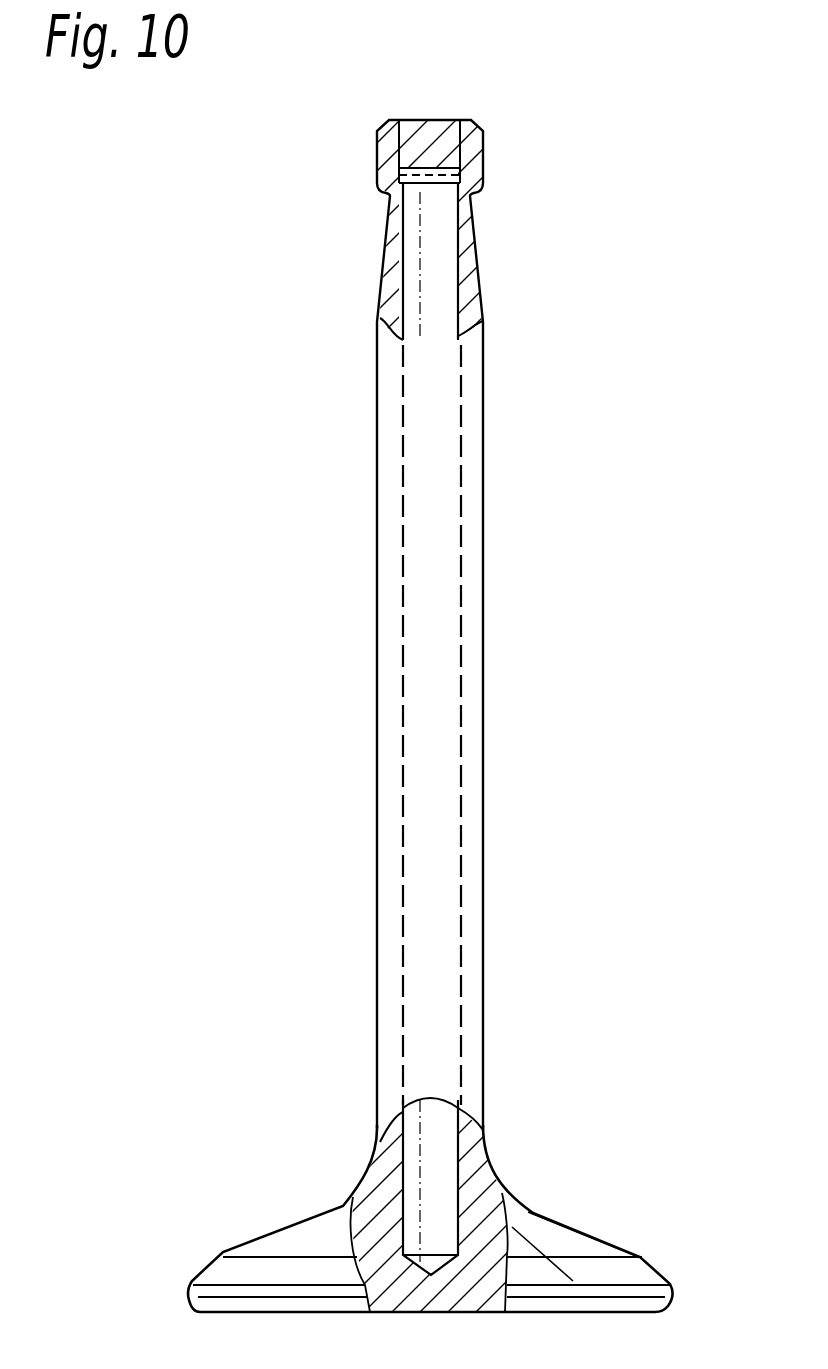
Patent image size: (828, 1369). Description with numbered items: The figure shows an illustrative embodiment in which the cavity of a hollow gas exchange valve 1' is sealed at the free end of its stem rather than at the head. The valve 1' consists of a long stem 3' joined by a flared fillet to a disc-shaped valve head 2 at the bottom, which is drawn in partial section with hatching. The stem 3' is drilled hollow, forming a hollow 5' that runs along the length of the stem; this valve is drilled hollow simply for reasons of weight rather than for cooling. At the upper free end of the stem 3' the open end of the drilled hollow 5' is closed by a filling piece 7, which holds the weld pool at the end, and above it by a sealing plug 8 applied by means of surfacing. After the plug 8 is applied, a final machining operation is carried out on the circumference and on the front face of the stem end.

The gas exchange valve 1' is at (452, 684).
The valve head 2 is at (632, 1273).
The stem 3' is at (435, 571).
The hollow 5' is at (377, 729).
The filling piece 7 is at (440, 188).
The sealing plug 8 is at (430, 118).